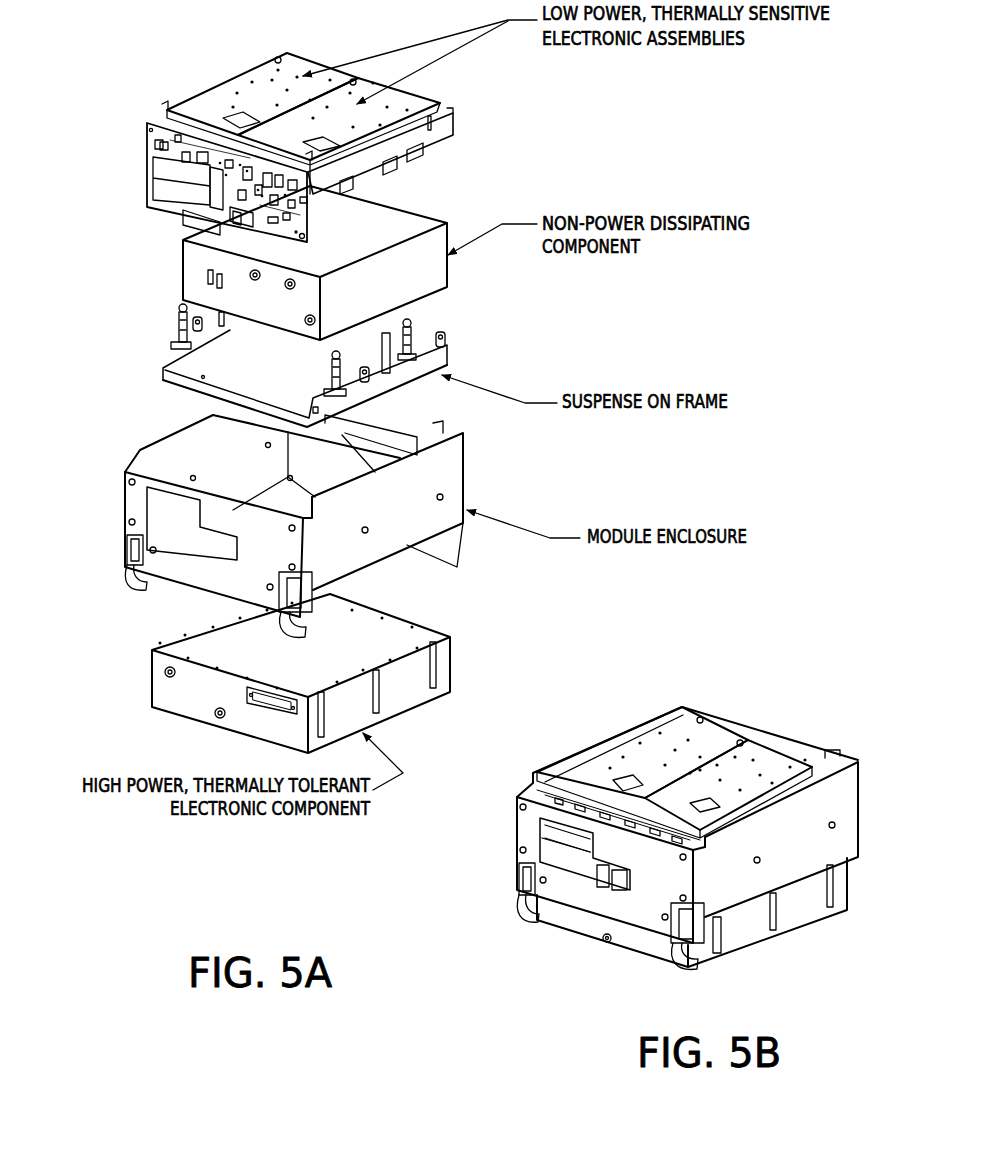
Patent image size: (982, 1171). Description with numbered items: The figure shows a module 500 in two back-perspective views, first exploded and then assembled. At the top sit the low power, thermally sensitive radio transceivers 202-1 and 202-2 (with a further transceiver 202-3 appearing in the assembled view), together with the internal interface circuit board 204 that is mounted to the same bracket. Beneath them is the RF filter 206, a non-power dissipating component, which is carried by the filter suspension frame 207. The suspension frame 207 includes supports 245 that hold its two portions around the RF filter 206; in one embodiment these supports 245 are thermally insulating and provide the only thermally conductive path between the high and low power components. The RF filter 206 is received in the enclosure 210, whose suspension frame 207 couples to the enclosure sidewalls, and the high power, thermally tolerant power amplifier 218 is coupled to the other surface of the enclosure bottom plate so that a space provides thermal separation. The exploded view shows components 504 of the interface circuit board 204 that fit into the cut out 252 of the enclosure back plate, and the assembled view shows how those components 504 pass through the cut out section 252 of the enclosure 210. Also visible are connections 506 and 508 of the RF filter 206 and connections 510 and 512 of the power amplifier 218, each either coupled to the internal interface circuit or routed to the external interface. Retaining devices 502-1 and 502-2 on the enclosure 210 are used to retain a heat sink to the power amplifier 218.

In FIG. 5A, the module 500 is at (122, 82).
In FIG. 5B, the module 500 is at (600, 717).
In FIG. 5A, the radio transceiver 202-1 is at (363, 112).
In FIG. 5A, the radio transceiver 202-2 is at (306, 72).
In FIG. 5B, the radio transceiver 202-2 is at (657, 742).
In FIG. 5B, the low power thermally sensitive electronic assembly 202-3 is at (765, 763).
In FIG. 5A, the internal interface circuit board 204 is at (147, 122).
In FIG. 5A, the RF filter 206 is at (452, 250).
In FIG. 5A, the filter suspension frame 207 is at (432, 143).
In FIG. 5A, the enclosure 210 is at (470, 481).
In FIG. 5A, the power amplifier 218 is at (400, 625).
In FIG. 5B, the power amplifier 218 is at (798, 907).
In FIG. 5A, the supports 245 is at (181, 331).
In FIG. 5B, the cutout section 252 is at (550, 808).
In FIG. 5A, the retaining device 502-1 is at (125, 566).
In FIG. 5B, the retaining device 502-1 is at (523, 878).
In FIG. 5A, the retaining device 502-2 is at (322, 590).
In FIG. 5B, the retaining device 502-2 is at (693, 960).
In FIG. 5A, the components 504 is at (187, 240).
In FIG. 5B, the components 504 is at (613, 883).
In FIG. 5A, the connection 506 is at (263, 271).
In FIG. 5A, the connection 508 is at (221, 285).
In FIG. 5A, the connection 510 is at (170, 674).
In FIG. 5B, the connection 510 is at (603, 940).
In FIG. 5A, the connection 512 is at (277, 687).